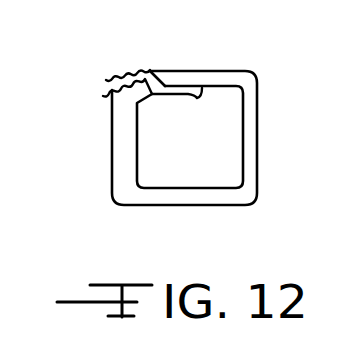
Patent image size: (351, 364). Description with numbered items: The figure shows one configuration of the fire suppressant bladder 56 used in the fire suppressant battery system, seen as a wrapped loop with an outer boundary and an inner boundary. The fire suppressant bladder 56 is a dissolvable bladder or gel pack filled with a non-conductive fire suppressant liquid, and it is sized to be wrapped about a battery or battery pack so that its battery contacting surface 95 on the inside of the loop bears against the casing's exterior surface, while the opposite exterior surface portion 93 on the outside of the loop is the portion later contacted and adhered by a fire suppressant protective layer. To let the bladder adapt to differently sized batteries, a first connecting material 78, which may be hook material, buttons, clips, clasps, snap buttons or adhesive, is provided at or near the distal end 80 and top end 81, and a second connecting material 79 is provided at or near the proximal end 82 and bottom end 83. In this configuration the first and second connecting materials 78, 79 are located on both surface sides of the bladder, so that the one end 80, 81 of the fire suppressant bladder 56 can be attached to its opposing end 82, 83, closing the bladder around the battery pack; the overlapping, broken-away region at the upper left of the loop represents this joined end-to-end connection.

The first fire suppressant bladder 56 is at (173, 146).
The first connecting material 78 is at (103, 96).
The second connecting material 79 is at (106, 80).
The distal end 80 is at (176, 122).
The top end 81 is at (176, 122).
The proximal end 82 is at (118, 49).
The bottom end 83 is at (150, 71).
The exterior surface portion 93 is at (258, 100).
The battery contacting surface 95 is at (242, 139).